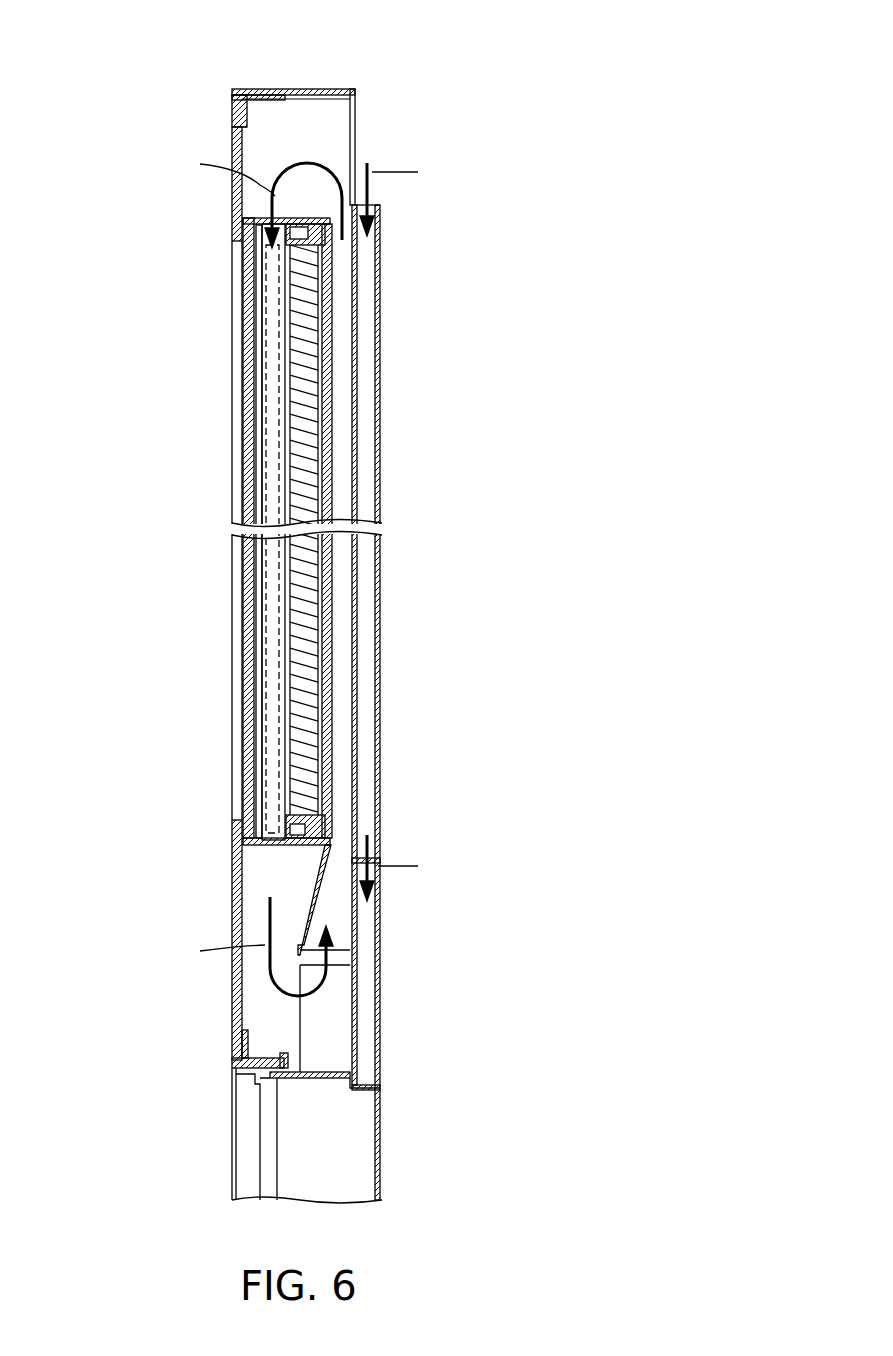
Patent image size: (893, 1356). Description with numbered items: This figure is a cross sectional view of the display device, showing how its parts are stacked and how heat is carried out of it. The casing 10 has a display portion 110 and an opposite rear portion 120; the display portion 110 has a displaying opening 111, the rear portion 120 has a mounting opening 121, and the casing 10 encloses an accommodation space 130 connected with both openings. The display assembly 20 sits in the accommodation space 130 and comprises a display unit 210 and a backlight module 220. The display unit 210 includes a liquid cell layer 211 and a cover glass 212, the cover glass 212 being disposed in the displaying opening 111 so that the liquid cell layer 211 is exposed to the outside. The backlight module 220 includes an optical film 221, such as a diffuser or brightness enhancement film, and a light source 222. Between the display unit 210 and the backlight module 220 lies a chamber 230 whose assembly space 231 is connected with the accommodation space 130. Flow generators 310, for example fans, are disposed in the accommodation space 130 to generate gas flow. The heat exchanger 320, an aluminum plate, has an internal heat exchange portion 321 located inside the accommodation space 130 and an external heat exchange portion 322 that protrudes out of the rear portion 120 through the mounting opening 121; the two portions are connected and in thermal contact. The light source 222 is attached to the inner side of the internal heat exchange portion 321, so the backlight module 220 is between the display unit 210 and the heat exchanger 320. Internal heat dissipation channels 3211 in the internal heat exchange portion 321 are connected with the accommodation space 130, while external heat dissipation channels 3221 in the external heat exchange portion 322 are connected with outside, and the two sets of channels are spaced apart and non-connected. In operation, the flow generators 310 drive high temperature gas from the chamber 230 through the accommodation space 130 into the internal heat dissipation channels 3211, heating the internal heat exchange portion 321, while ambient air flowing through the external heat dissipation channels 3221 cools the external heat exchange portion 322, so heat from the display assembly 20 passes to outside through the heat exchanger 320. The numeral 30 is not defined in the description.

The casing 10 is at (427, 52).
The display portion 110 is at (233, 117).
The rear portion 120 is at (356, 117).
The accommodation space 130 is at (303, 145).
The displaying opening 111 is at (233, 276).
The display assembly 20 is at (75, 588).
The display unit 210 is at (145, 692).
The liquid cell layer 211 is at (250, 769).
The cover glass 212 is at (258, 712).
The backlight module 220 is at (145, 560).
The optical film 221 is at (288, 578).
The light source 222 is at (326, 652).
The chamber 230 is at (271, 379).
The assembly space 231 is at (265, 413).
The air duct assembly 30 is at (540, 393).
The flow generator 310 is at (330, 998).
The heat exchanger 320 is at (478, 365).
The internal heat exchange portion 321 is at (356, 471).
The external heat exchange portion 322 is at (381, 382).
The internal heat dissipation channel 3211 is at (341, 313).
The external heat dissipation channel 3221 is at (366, 342).
The mounting opening 121 is at (350, 863).